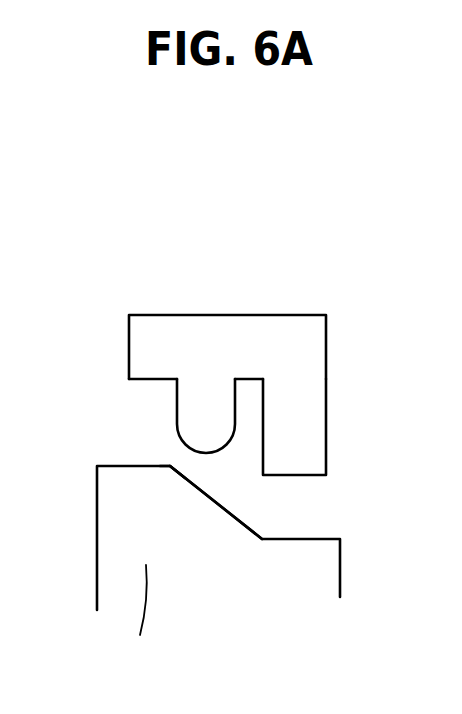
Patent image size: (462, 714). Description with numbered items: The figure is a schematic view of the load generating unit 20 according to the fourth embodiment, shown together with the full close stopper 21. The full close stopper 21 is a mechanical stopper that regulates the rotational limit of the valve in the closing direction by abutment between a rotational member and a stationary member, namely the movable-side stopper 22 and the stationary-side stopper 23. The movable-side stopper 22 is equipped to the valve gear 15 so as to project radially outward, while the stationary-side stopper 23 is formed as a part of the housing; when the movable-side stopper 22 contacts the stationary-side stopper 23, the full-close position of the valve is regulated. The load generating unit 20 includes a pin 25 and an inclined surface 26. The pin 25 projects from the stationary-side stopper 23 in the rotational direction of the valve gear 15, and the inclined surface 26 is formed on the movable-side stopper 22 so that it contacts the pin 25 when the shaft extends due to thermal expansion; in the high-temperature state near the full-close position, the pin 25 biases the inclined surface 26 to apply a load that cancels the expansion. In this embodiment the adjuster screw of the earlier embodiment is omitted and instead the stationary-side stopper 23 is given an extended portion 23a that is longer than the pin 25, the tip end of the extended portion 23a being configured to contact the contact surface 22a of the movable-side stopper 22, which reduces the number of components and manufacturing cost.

The valve gear 15 is at (140, 618).
The load generating unit 20 is at (134, 425).
The full close stopper 21 is at (267, 462).
The movable-side stopper 22 is at (332, 563).
The contact surface 22a is at (280, 502).
The stationary-side stopper 23 is at (308, 348).
The extended portion 23a is at (308, 412).
The pin 25 is at (183, 400).
The inclined surface 26 is at (193, 482).